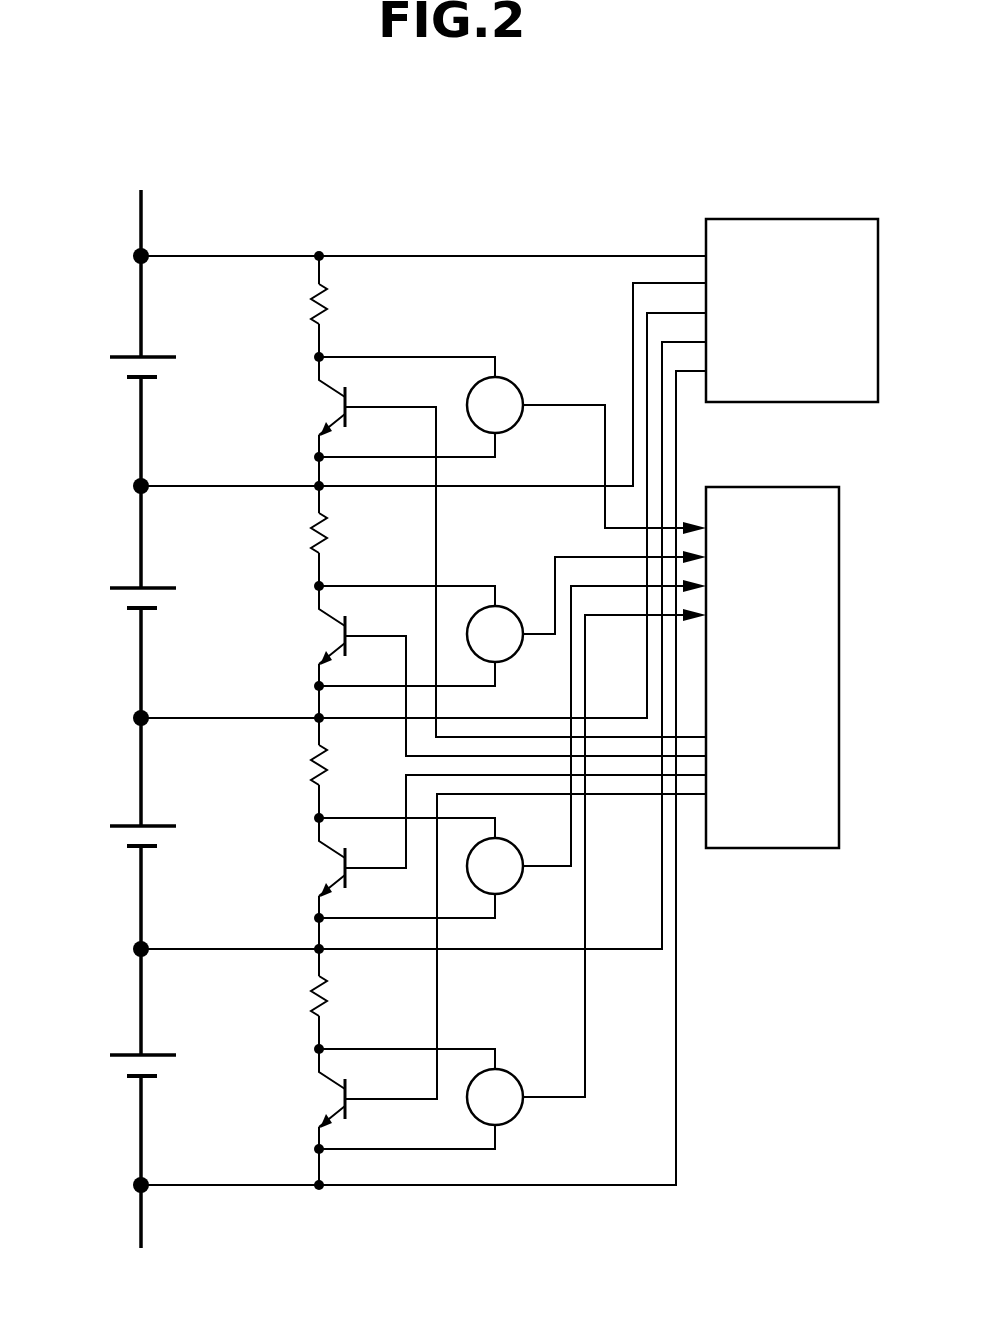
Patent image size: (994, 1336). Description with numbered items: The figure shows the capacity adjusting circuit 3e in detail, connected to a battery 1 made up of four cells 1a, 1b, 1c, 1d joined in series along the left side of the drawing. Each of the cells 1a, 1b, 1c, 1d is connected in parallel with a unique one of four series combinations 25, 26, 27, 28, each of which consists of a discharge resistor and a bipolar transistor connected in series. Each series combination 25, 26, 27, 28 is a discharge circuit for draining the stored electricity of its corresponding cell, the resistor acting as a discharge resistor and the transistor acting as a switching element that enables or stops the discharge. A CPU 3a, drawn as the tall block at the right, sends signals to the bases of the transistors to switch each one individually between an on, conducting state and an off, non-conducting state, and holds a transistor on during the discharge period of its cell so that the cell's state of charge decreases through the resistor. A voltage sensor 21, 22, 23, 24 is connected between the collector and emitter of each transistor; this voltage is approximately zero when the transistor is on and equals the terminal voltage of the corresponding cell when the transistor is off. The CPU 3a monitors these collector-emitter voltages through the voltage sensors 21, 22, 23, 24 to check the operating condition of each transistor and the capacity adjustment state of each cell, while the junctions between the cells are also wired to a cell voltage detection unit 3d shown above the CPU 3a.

The battery 1 is at (100, 303).
The cell 1a is at (122, 360).
The cell 1b is at (122, 600).
The cell 1c is at (122, 837).
The cell 1d is at (122, 1068).
The CPU 3a is at (765, 487).
The cell voltage detection unit 3d is at (790, 218).
The capacity adjusting circuit 3e is at (463, 229).
The voltage sensor 21 is at (516, 386).
The voltage sensor 22 is at (500, 606).
The voltage sensor 23 is at (516, 879).
The voltage sensor 24 is at (502, 1071).
The series combination 25 is at (298, 333).
The series combination 26 is at (298, 562).
The series combination 27 is at (298, 794).
The series combination 28 is at (298, 1025).